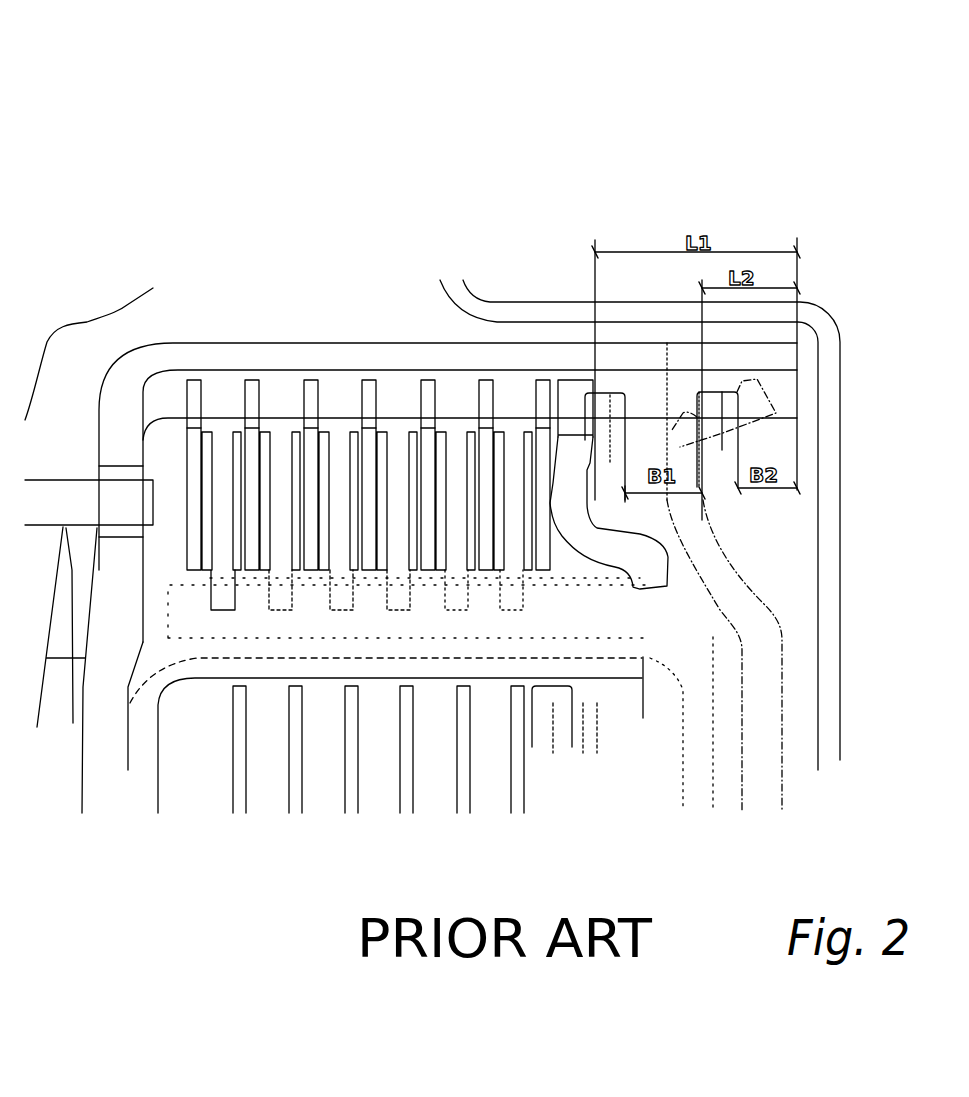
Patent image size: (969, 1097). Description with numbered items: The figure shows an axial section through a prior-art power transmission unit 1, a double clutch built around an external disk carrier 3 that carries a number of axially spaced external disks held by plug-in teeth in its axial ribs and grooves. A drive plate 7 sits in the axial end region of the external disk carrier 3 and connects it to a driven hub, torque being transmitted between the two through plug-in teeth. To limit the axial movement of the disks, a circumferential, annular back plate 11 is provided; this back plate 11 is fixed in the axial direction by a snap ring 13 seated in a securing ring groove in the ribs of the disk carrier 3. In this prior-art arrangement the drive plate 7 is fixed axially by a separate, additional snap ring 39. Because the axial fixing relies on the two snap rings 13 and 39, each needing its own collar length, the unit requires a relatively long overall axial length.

The power transmission unit 1 is at (380, 92).
The external disk carrier 3 is at (287, 357).
The drive plate 7 is at (758, 637).
The back plate 11 is at (577, 463).
The snap ring 13 is at (612, 460).
The snap ring 39 is at (717, 450).